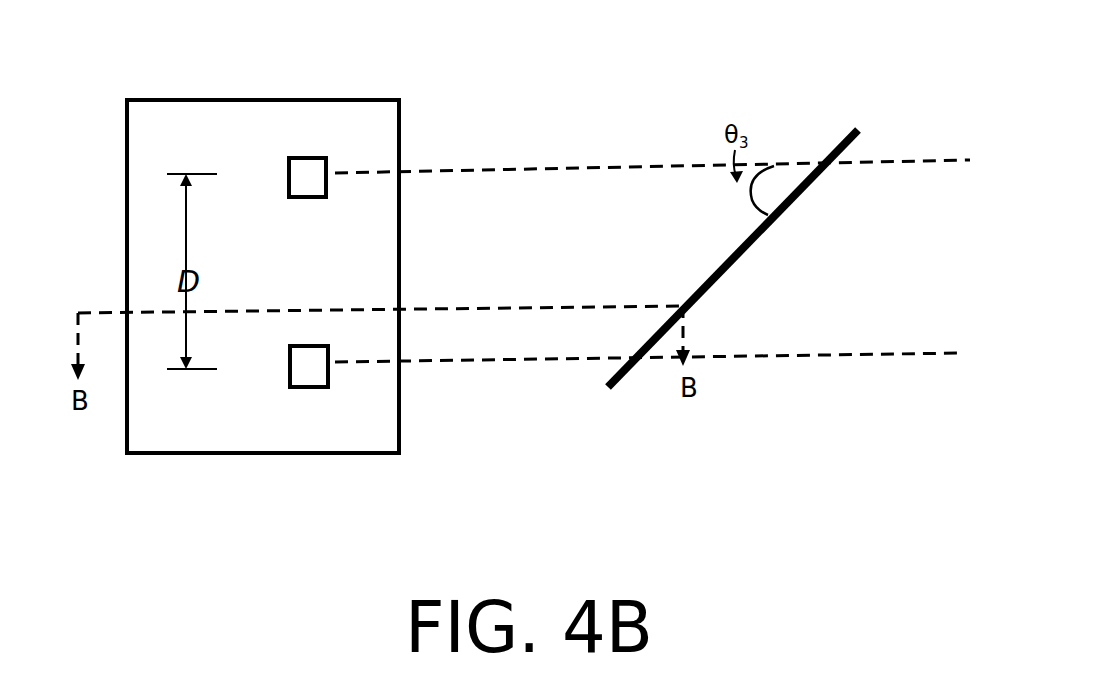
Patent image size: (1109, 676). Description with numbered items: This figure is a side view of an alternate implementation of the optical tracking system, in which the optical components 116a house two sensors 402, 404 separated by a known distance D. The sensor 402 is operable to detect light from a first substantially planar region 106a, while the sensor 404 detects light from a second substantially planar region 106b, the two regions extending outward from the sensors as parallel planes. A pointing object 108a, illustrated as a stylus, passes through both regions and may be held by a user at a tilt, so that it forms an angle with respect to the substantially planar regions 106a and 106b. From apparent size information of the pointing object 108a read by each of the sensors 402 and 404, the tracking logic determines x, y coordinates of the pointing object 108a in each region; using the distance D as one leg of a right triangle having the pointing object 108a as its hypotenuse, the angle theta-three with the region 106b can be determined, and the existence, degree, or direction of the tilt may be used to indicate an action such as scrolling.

The optical components 116a is at (353, 98).
The sensor 404 is at (288, 175).
The sensor 402 is at (289, 365).
The substantially planar region 106b is at (575, 168).
The substantially planar region 106a is at (470, 362).
The pointing object 108a is at (853, 128).